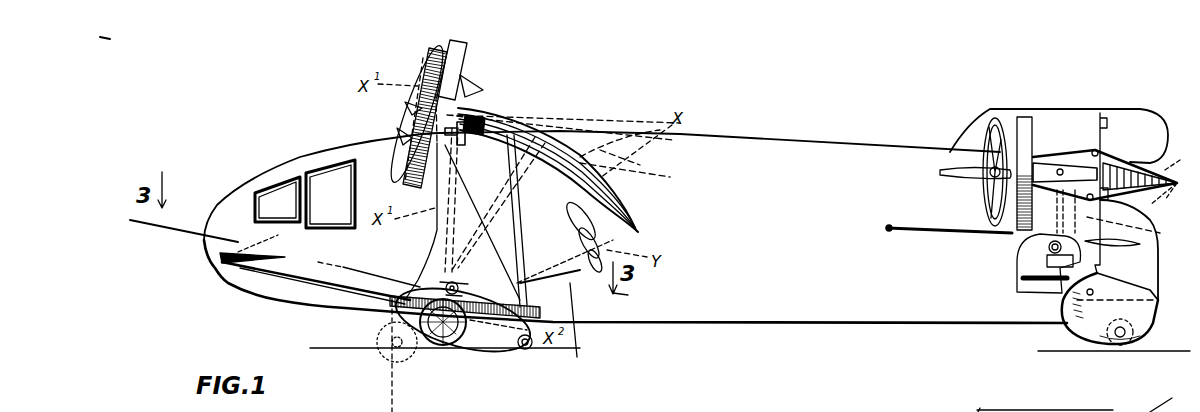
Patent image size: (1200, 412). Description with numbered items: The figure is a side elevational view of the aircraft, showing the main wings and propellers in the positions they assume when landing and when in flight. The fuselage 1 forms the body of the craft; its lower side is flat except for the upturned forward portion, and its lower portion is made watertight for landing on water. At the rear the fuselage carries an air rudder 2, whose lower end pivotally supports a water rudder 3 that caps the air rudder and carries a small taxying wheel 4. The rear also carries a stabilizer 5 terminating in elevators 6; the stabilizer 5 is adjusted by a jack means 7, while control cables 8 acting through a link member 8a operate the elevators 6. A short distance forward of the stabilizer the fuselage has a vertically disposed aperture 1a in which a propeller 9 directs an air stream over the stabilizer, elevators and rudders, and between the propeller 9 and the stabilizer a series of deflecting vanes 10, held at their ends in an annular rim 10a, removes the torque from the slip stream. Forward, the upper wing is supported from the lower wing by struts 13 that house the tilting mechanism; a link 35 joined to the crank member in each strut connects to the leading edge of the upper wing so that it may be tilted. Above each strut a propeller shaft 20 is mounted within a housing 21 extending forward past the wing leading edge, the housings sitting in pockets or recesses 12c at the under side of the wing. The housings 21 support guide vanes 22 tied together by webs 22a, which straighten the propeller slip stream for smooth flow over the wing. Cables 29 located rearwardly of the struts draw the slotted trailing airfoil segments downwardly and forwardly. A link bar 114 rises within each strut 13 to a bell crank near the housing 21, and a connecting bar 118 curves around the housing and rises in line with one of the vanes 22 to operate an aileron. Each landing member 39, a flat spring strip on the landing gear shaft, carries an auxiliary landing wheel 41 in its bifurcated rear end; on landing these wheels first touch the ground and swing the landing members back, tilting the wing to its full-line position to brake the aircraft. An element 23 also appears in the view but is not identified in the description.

The fuselage 1 is at (733, 152).
The vertically disposed aperture 1a is at (980, 148).
The air rudder 2 is at (1125, 124).
The water rudder 3 is at (1143, 322).
The taxying wheel 4 is at (1120, 345).
The stabilizer 5 is at (1042, 160).
The elevators 6 is at (1160, 163).
The jack means 7 is at (1030, 278).
The control cables 8 is at (1072, 155).
The link member 8a is at (1158, 240).
The propeller 9 is at (988, 190).
The deflecting vanes 10 is at (1024, 200).
The annular rim 10a is at (1024, 130).
The pockets or recesses 12c is at (625, 222).
The struts 13 is at (475, 201).
The propeller shaft 20 is at (413, 380).
The housing 21 is at (850, 318).
The guide or deflecting vanes 22 is at (1097, 395).
The webs 22a is at (961, 401).
The tail member 23 is at (1175, 403).
The cables 29 is at (577, 357).
The link 35 is at (443, 232).
The landing member 39 is at (455, 347).
The auxiliary landing wheel 41 is at (520, 351).
The link bar 114 is at (512, 216).
The connecting bar 118 is at (403, 323).